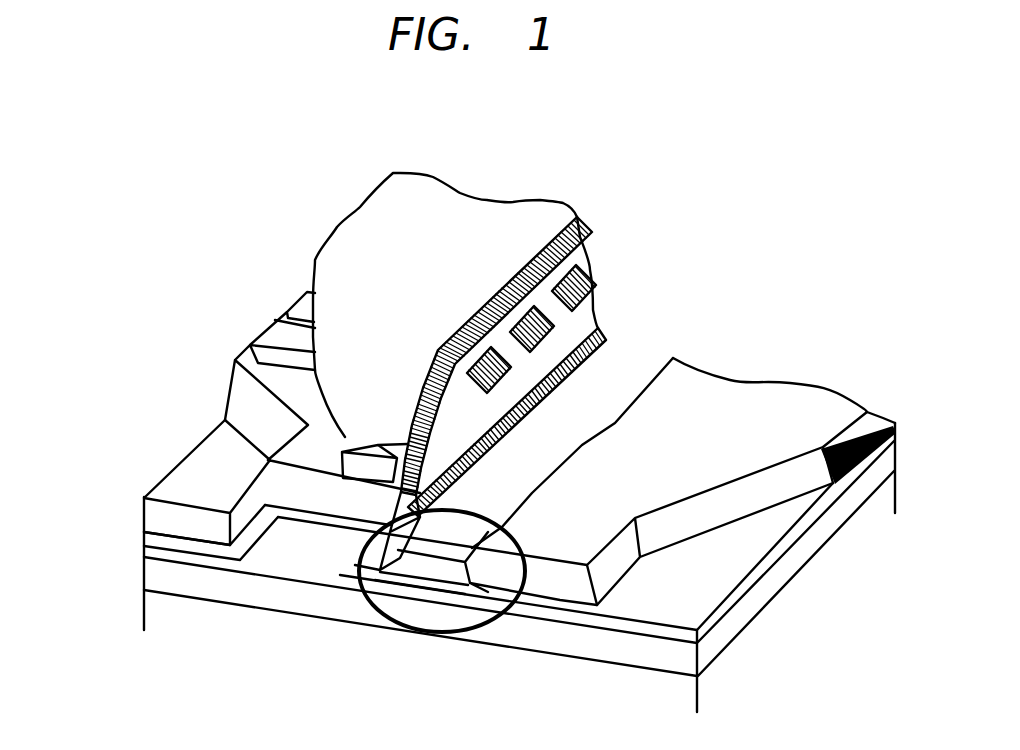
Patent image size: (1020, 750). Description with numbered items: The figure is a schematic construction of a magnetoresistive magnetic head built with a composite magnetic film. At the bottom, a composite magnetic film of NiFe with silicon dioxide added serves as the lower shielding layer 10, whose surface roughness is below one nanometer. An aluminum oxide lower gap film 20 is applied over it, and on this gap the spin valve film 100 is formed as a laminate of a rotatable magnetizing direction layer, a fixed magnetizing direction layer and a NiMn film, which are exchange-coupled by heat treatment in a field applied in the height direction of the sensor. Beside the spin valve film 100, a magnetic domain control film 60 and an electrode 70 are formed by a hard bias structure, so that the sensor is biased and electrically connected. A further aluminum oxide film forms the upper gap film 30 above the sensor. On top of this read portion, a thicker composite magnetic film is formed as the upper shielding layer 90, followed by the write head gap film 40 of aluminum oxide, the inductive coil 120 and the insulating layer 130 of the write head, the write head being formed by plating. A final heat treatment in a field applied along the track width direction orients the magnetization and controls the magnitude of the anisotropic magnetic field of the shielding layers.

The lower shielding layer 10 is at (790, 563).
The lower gap film 20 is at (188, 558).
The upper gap film 30 is at (170, 542).
The write head gap film 40 is at (350, 488).
The magnetic domain control film 60 is at (560, 657).
The electrode 70 is at (790, 402).
The upper shielding layer 90 is at (597, 331).
The spin valve film 100 is at (533, 212).
The inductive coil 120 is at (597, 279).
The insulating layer 130 is at (583, 252).